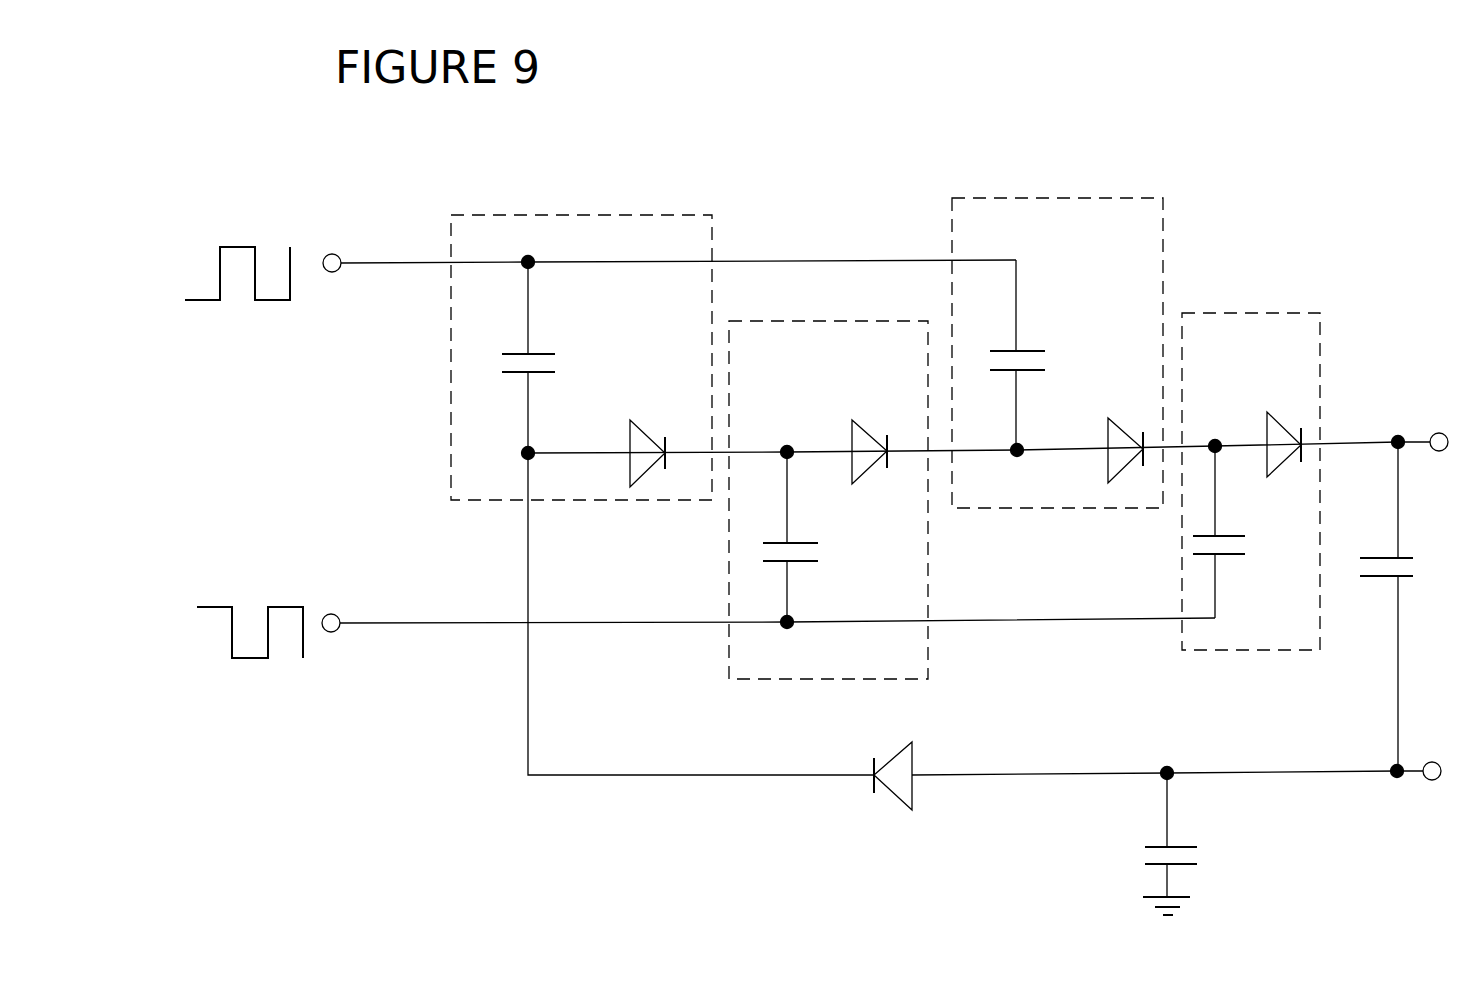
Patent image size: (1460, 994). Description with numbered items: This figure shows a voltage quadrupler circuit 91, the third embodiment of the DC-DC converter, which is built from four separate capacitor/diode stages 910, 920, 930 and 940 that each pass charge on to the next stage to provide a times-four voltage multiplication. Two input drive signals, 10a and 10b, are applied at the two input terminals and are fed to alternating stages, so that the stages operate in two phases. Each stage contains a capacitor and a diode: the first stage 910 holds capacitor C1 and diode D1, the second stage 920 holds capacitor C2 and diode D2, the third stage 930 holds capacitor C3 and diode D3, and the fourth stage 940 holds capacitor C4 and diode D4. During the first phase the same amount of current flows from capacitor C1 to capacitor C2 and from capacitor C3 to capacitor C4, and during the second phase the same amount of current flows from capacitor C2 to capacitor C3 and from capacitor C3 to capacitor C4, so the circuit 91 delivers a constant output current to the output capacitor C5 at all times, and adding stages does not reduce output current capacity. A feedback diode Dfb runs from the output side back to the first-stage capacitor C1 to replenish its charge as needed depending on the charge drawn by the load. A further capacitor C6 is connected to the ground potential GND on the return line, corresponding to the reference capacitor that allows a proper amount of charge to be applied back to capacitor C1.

The first clock input waveform 10a is at (221, 249).
The second clock input waveform 10b is at (225, 607).
The voltage quadrupler circuit 91 is at (891, 482).
The first stage 910 is at (581, 327).
The second stage 920 is at (828, 472).
The third stage 930 is at (1057, 327).
The fourth stage 940 is at (1251, 453).
The capacitor C1 is at (516, 357).
The capacitor C2 is at (775, 537).
The capacitor C3 is at (1003, 355).
The capacitor C4 is at (1233, 532).
The output capacitor C5 is at (1372, 606).
The ground return capacitor C6 is at (1155, 835).
The first stage diode D1 is at (631, 418).
The second stage diode D2 is at (853, 417).
The third stage diode D3 is at (1108, 414).
The fourth stage diode D4 is at (1267, 408).
The feedback diode Dfb is at (917, 805).
The ground reference GND is at (1203, 881).